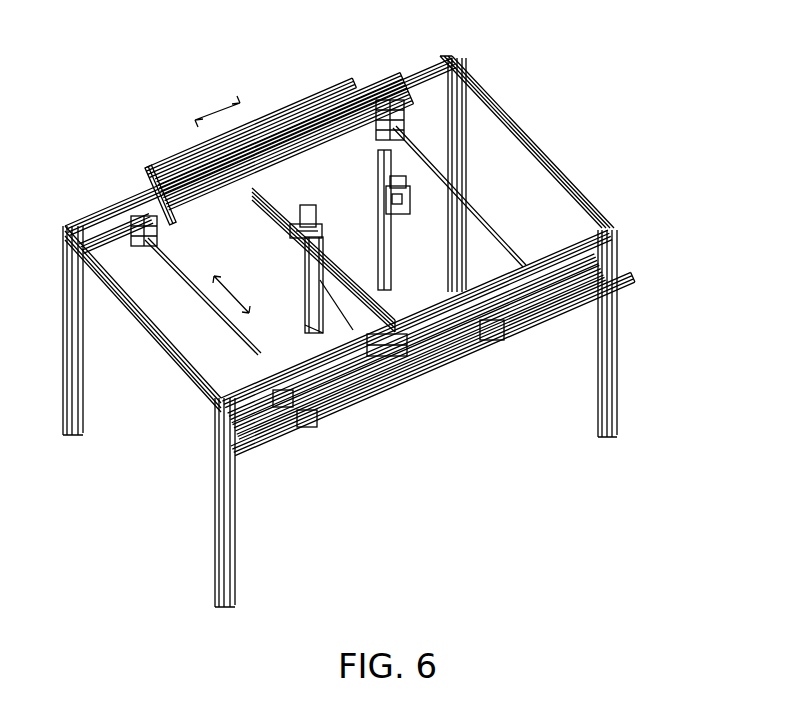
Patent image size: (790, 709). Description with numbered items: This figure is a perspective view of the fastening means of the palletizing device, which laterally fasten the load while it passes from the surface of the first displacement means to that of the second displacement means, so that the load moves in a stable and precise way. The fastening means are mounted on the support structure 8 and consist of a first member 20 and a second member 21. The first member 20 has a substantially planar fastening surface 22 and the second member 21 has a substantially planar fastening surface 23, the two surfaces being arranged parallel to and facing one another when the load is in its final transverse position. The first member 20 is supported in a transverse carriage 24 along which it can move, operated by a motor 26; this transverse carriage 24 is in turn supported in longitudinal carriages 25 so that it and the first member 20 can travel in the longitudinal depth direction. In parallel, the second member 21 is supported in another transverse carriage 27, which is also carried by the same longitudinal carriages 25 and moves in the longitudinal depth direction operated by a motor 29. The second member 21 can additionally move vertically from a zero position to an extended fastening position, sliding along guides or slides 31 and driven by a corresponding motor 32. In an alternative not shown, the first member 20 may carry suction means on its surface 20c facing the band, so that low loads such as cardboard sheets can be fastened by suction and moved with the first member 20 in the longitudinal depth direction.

The support structure 8 is at (90, 210).
The first member 20 is at (322, 220).
The surface 20c is at (203, 381).
The second member 21 is at (477, 360).
The fastening surface 22 is at (391, 393).
The fastening surface 23 is at (418, 352).
The transverse carriage 24 is at (413, 387).
The longitudinal carriages 25 is at (143, 183).
The motor 26 is at (298, 224).
The transverse carriage 27 is at (417, 238).
The motor 29 is at (362, 95).
The guides or slides 31 is at (400, 212).
The motor 32 is at (397, 190).